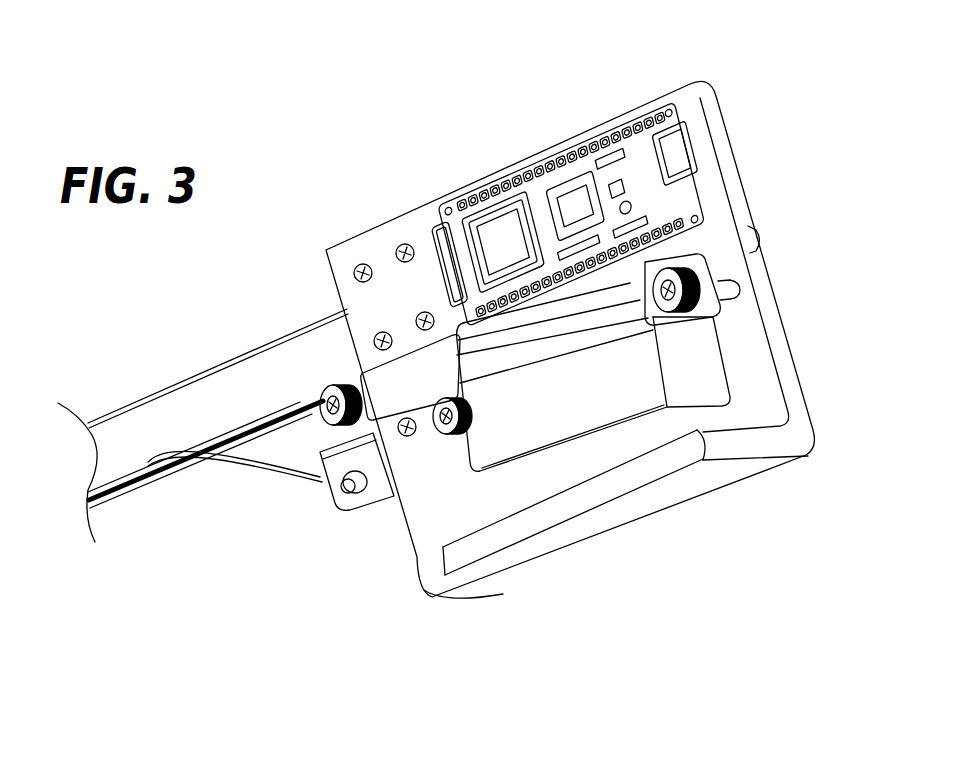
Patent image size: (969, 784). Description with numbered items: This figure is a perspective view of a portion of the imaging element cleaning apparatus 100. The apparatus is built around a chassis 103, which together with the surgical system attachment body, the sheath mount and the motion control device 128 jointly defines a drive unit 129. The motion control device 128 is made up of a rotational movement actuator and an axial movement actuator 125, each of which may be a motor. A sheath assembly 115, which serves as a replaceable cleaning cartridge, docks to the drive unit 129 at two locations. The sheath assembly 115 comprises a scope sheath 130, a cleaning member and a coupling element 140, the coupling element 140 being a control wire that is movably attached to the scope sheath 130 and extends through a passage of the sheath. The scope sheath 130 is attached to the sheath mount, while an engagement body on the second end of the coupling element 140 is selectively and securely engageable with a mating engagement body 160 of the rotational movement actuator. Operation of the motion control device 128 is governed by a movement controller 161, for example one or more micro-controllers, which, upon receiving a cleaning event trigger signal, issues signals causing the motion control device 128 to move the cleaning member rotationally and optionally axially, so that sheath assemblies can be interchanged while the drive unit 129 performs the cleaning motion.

The imaging element cleaning apparatus 100 is at (340, 158).
The chassis 103 is at (510, 578).
The sheath assembly 115 is at (137, 393).
The axial movement actuator 125 is at (618, 395).
The motion control device 128 is at (695, 355).
The drive unit 129 is at (607, 534).
The scope sheath 130 is at (287, 337).
The coupling element 140 is at (257, 470).
The mating engagement body 160 is at (370, 505).
The movement controller 161 is at (626, 125).